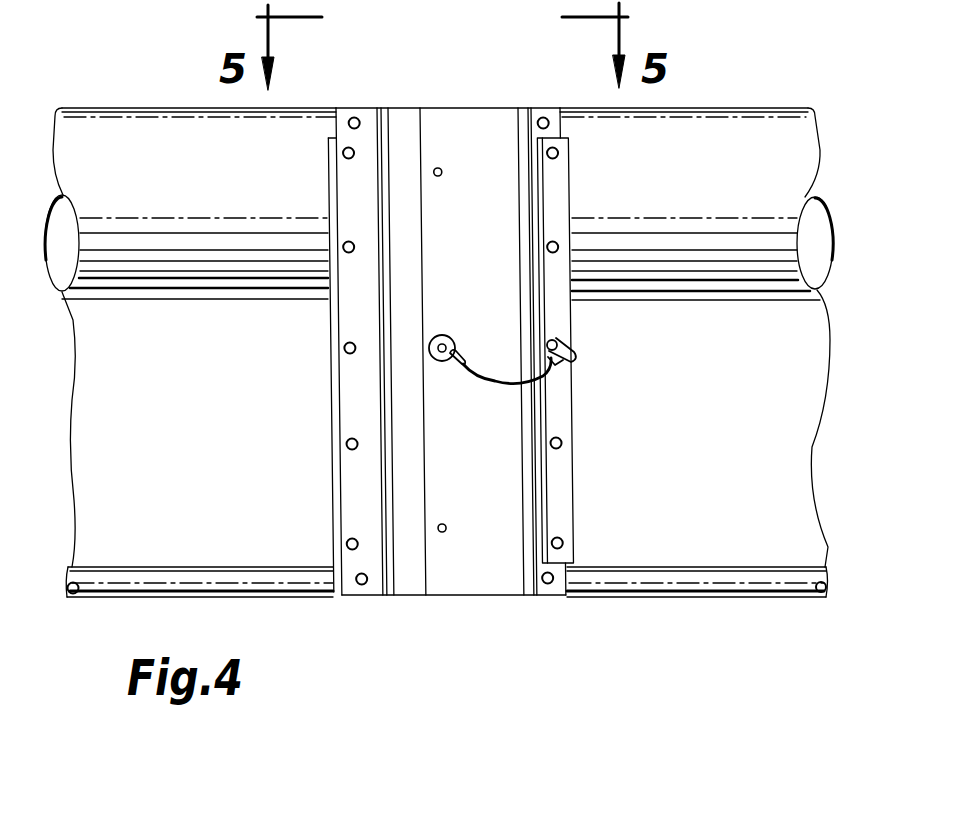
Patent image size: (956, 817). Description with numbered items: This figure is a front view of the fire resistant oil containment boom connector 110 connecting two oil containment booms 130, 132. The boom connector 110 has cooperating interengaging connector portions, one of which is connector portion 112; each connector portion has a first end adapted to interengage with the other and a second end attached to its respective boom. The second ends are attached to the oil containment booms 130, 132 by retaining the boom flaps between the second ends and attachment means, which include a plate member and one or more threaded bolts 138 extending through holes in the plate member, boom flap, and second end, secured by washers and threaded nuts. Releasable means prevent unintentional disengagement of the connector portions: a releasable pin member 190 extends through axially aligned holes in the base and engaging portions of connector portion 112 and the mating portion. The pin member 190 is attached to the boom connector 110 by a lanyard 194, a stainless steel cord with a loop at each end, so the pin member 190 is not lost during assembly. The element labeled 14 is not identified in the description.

The fire resistant oil containment boom connector 110 is at (443, 102).
The connector portion 112 is at (398, 115).
The second flange plate 14 is at (497, 118).
The oil containment boom 130 is at (113, 123).
The oil containment boom 132 is at (735, 122).
The threaded bolt 138 is at (557, 150).
The releasable pin member 190 is at (448, 331).
The lanyard 194 is at (490, 381).